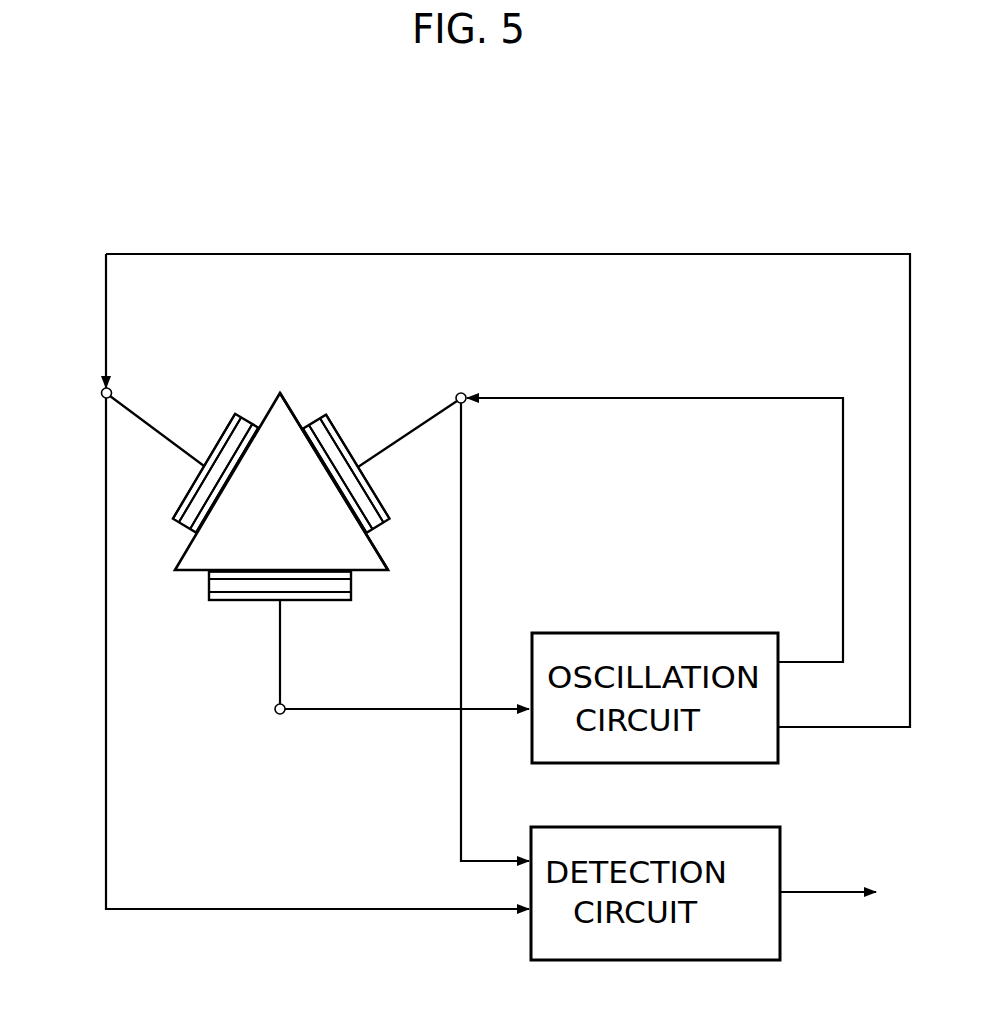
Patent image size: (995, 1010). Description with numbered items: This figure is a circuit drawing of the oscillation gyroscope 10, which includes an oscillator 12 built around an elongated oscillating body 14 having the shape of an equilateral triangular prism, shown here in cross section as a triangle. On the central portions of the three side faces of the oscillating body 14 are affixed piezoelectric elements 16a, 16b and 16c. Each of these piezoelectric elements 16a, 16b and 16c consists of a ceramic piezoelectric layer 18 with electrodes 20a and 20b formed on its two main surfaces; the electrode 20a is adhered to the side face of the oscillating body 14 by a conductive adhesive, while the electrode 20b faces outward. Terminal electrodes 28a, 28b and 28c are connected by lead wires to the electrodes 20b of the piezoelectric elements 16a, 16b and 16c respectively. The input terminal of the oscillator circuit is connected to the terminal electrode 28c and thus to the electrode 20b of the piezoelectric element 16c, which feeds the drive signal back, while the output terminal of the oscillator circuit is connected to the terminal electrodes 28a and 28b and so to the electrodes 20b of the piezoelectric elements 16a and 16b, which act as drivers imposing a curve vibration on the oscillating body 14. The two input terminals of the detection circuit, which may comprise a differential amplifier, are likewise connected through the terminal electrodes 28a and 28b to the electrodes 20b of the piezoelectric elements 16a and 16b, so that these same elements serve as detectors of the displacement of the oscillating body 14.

The oscillation gyroscope 10 is at (738, 216).
The oscillator 12 is at (292, 388).
The oscillating body 14 is at (288, 427).
The piezoelectric element 16a is at (189, 473).
The piezoelectric element 16b is at (349, 414).
The piezoelectric element 16c is at (253, 605).
The piezoelectric layer 18 is at (245, 418).
The electrode 20a is at (250, 428).
The electrode 20b is at (232, 414).
The terminal electrode 28a is at (103, 390).
The terminal electrode 28b is at (465, 392).
The terminal electrode 28c is at (284, 715).